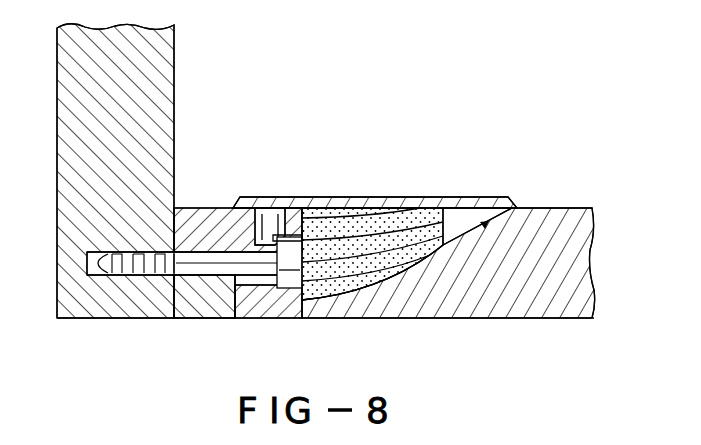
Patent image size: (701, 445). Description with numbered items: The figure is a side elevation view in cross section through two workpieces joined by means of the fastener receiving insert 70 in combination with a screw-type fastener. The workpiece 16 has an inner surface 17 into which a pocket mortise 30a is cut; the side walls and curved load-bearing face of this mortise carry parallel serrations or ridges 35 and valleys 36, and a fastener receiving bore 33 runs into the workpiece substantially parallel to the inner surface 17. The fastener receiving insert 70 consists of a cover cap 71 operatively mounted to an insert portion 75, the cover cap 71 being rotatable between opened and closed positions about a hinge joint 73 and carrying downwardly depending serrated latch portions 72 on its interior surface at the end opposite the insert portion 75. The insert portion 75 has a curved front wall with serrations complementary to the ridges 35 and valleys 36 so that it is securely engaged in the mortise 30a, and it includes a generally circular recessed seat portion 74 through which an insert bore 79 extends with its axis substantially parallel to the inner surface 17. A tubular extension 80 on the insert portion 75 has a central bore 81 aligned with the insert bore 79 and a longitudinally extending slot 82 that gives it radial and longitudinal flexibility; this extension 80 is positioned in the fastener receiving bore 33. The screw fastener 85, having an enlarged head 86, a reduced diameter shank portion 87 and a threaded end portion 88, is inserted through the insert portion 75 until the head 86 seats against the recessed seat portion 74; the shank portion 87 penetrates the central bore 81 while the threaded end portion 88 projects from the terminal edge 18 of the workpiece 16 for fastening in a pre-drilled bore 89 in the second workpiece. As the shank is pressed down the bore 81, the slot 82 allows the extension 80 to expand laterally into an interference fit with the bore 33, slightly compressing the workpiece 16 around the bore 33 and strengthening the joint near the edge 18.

The workpiece 16 is at (500, 293).
The inner surface 17 is at (540, 208).
The terminal edge 18 is at (166, 320).
The mortise 30a is at (410, 233).
The fastener receiving bore 33 is at (215, 245).
The serrations or ridges 35 is at (312, 298).
The valleys 36 is at (356, 275).
The fastener receiving insert 70 is at (392, 180).
The cover cap 71 is at (352, 197).
The serrated latch portions 72 is at (468, 200).
The hinge joint 73 is at (268, 218).
The recessed seat portion 74 is at (312, 197).
The insert portion 75 is at (272, 200).
The insert bore 79 is at (268, 318).
The tubular extension 80 is at (206, 266).
The central bore 81 is at (222, 284).
The slot 82 is at (184, 282).
The screw fastener 85 is at (243, 198).
The enlarged head 86 is at (287, 261).
The shank portion 87 is at (206, 250).
The threaded end portion 88 is at (137, 274).
The pre-drilled bore 89 is at (98, 278).